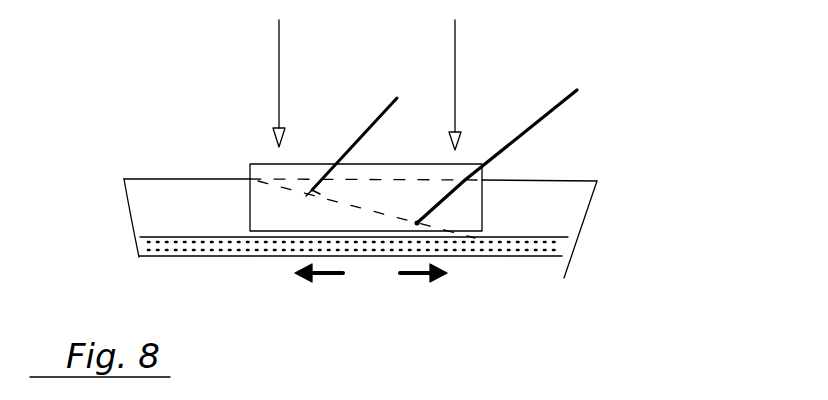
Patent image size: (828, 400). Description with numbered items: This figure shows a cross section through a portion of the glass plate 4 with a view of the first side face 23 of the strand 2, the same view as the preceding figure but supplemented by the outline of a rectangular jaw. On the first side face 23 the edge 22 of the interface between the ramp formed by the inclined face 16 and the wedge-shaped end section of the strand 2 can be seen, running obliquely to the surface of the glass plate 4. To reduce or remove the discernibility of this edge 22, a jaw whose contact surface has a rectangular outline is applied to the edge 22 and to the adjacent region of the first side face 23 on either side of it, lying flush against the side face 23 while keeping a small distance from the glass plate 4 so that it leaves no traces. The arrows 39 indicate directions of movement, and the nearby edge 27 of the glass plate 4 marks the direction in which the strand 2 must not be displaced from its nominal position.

The strand 2 is at (545, 188).
The glass plate 4 is at (560, 246).
The inclined face 16 is at (366, 148).
The edge 22 is at (517, 141).
The first side face 23 is at (212, 222).
The edge of glass plate 27 is at (397, 166).
The arrow 39 is at (279, 58).